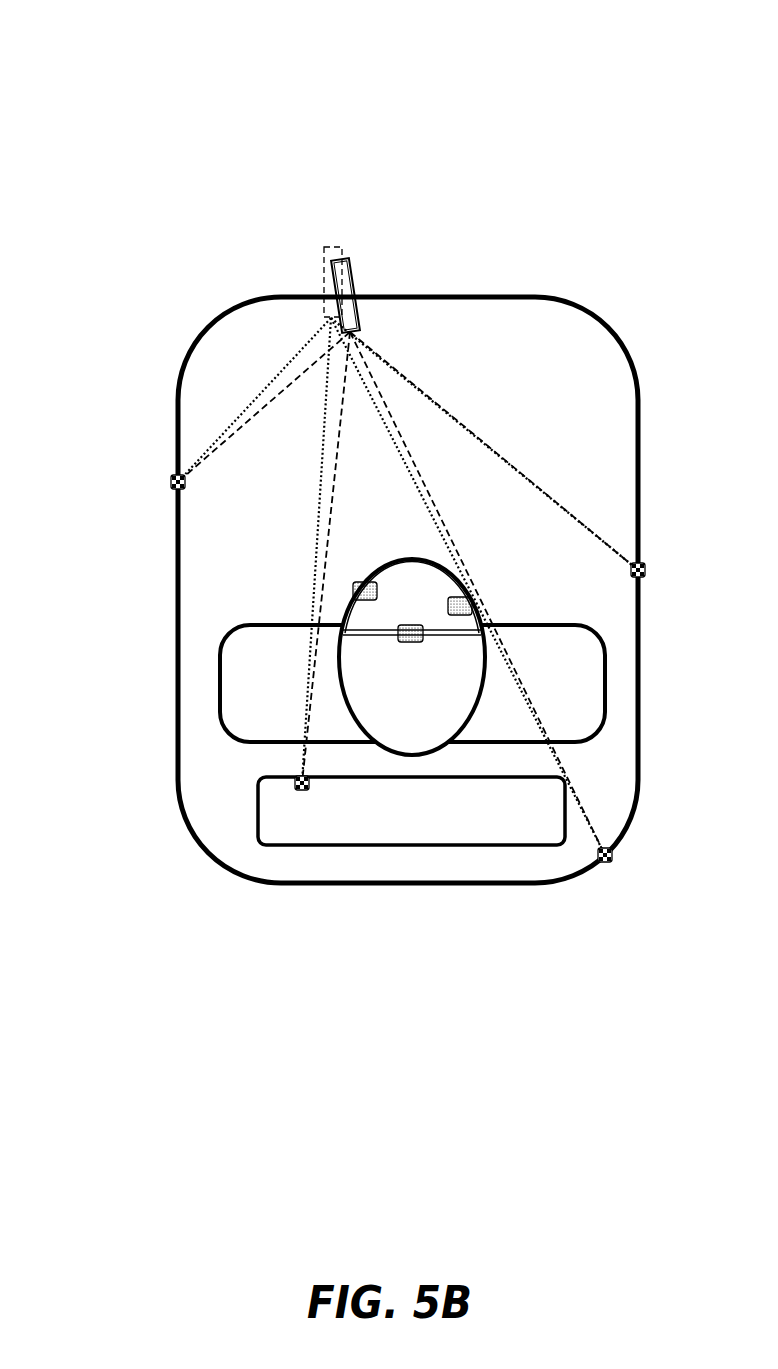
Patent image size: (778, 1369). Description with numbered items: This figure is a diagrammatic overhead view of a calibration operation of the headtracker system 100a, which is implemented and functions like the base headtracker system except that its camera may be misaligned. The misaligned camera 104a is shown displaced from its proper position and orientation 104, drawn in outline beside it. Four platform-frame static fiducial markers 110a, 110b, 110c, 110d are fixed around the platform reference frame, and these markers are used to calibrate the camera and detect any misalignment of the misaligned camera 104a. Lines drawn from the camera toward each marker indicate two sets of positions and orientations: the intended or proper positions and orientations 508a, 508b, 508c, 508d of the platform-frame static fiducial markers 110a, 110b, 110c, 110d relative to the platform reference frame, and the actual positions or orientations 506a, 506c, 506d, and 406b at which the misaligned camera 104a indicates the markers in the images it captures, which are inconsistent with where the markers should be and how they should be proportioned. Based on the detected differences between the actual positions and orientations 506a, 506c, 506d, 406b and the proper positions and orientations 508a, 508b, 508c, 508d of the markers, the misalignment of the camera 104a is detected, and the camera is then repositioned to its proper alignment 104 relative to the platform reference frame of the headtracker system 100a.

The headtracker system 100a is at (110, 92).
The camera proper position and orientation 104 is at (330, 290).
The misaligned camera 104a is at (343, 288).
The platform-frame static fiducial marker 110a is at (645, 573).
The platform-frame static fiducial marker 110b is at (610, 860).
The platform-frame static fiducial marker 110c is at (300, 790).
The platform-frame static fiducial marker 110d is at (172, 478).
The proper position and orientation of fiducial marker 508a is at (377, 352).
The proper position and orientation of fiducial marker 508b is at (400, 448).
The proper position and orientation of fiducial marker 508c is at (322, 468).
The proper position and orientation of fiducial marker 508d is at (287, 365).
The actual position and orientation of fiducial marker 506a is at (408, 378).
The actual position and orientation of fiducial marker 506c is at (327, 528).
The actual position and orientation of fiducial marker 506d is at (272, 403).
The signal path 406b is at (430, 488).